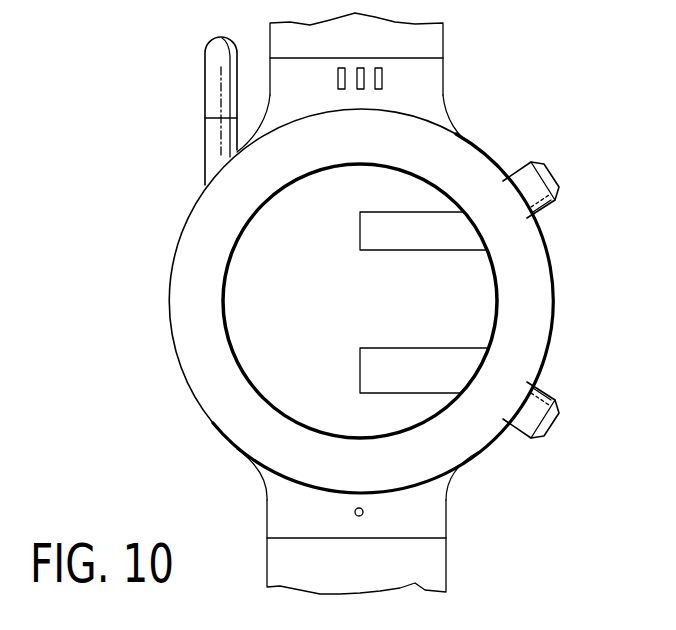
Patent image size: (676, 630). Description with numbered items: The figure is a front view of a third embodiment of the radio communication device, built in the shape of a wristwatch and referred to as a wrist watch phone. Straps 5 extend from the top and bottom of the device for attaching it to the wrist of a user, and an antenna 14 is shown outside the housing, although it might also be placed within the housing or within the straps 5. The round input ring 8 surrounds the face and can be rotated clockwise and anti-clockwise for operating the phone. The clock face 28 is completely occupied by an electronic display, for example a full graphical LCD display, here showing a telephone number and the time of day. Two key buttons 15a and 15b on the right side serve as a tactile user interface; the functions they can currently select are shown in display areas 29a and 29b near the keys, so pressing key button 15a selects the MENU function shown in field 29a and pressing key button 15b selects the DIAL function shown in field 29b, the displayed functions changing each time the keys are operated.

The strap 5 is at (447, 43).
The input ring 8 is at (535, 262).
The antenna 14 is at (218, 55).
The key button 15a is at (557, 178).
The key button 15b is at (558, 418).
The clock face 28 is at (480, 316).
The display area 29a is at (458, 232).
The display area 29b is at (447, 373).